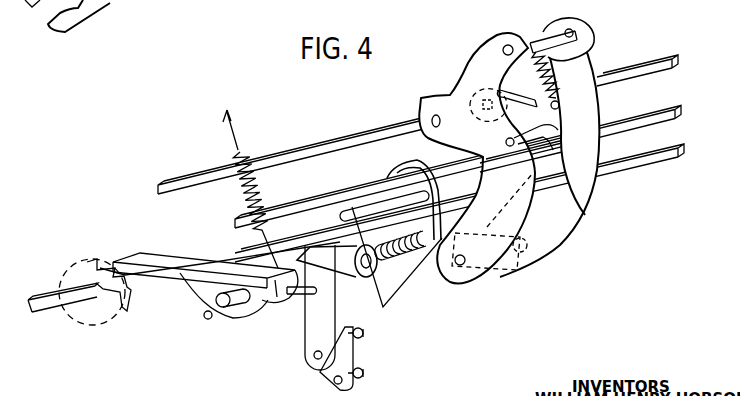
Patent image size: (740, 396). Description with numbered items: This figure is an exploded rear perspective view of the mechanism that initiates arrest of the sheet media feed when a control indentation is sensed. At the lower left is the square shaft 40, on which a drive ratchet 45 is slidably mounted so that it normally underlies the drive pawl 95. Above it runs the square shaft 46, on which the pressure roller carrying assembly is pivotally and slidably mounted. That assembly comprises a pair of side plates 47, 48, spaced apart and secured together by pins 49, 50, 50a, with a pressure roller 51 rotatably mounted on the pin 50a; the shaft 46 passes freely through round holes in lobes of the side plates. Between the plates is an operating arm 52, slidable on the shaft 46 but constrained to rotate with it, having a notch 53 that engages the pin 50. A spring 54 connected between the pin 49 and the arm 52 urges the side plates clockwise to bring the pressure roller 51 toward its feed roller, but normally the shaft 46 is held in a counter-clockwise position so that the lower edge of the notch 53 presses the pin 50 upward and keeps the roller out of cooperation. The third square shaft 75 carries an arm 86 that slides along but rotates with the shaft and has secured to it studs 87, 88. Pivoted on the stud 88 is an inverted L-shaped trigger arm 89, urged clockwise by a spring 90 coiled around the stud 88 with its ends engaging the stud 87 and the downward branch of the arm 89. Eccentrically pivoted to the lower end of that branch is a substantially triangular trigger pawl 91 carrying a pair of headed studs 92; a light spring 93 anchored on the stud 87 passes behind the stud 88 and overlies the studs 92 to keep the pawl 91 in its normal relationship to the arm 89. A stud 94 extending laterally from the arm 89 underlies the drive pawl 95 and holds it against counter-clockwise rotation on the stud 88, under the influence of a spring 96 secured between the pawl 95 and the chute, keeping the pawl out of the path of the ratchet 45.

The square shaft 40 is at (635, 158).
The drive ratchet 45 is at (80, 277).
The square shaft 46 is at (392, 124).
The side plate 47 is at (492, 50).
The side plate 48 is at (570, 20).
The pin 49 is at (587, 26).
The pin 50 is at (577, 123).
The pin 50a is at (462, 265).
The pressure roller 51 is at (528, 257).
The operating arm 52 is at (528, 107).
The notch 53 is at (563, 143).
The spring 54 is at (567, 62).
The square shaft 75 is at (330, 204).
The arm 86 is at (403, 273).
The stud 87 is at (383, 208).
The stud 88 is at (410, 234).
The trigger arm 89 is at (302, 350).
The spring 90 is at (347, 285).
The trigger pawl 91 is at (330, 373).
The headed studs 92 is at (370, 357).
The light spring 93 is at (358, 322).
The stud 94 is at (273, 312).
The drive pawl 95 is at (203, 287).
The spring 96 is at (238, 158).